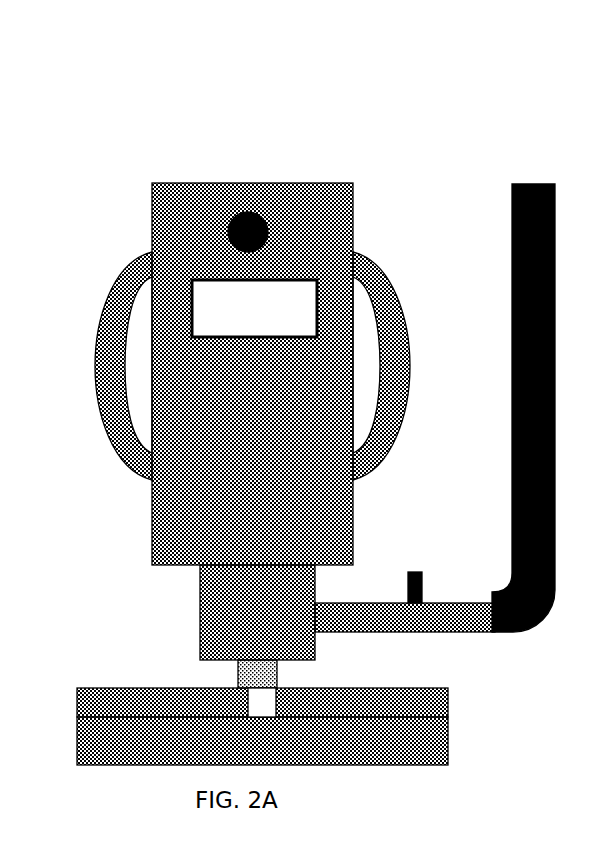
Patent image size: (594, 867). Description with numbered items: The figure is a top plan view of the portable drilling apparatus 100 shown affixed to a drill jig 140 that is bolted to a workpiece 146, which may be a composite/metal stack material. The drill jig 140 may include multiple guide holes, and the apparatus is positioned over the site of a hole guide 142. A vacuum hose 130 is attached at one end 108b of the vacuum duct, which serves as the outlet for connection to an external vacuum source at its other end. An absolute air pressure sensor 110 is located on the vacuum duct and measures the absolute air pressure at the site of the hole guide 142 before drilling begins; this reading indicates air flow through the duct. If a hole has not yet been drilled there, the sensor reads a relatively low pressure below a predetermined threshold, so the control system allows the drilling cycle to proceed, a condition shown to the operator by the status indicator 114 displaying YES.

The portable drilling apparatus 100 is at (285, 147).
The status indicator 114 is at (318, 307).
The vacuum hose 130 is at (535, 184).
The end of vacuum duct 108b is at (458, 602).
The absolute air pressure sensor 110 is at (410, 572).
The hole guide 142 is at (237, 690).
The drill jig 140 is at (450, 698).
The workpiece 146 is at (450, 745).